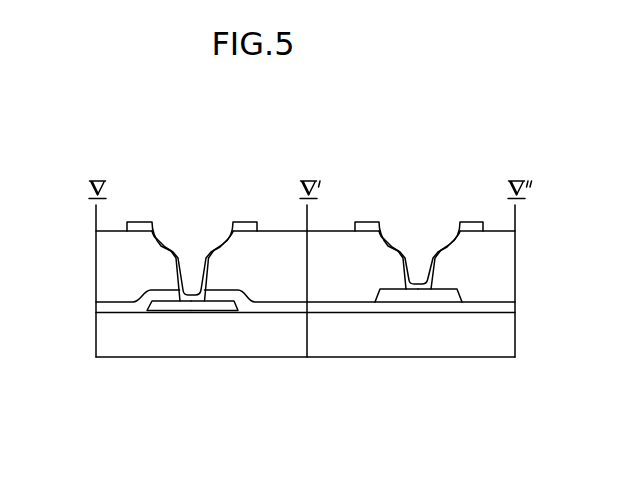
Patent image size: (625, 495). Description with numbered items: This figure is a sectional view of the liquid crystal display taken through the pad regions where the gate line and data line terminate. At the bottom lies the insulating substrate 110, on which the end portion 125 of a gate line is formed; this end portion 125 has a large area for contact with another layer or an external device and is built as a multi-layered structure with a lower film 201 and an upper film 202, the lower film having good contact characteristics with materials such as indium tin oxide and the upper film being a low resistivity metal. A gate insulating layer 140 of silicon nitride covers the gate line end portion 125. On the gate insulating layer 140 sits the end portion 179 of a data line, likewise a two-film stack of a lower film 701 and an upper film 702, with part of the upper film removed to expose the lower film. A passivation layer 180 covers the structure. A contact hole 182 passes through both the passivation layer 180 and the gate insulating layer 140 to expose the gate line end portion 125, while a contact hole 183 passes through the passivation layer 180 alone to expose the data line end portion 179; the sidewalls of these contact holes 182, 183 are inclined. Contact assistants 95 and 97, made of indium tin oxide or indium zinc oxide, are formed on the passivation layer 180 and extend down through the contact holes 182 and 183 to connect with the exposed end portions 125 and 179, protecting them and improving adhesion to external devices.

The contact assistant 95 is at (162, 248).
The contact assistant 97 is at (392, 248).
The insulating substrate 110 is at (328, 345).
The end portion of gate line 125 is at (189, 369).
The gate insulating layer 140 is at (273, 310).
The end portion of data line 179 is at (417, 372).
The passivation layer 180 is at (266, 236).
The contact hole 182 is at (192, 258).
The contact hole 183 is at (419, 258).
The lower gate layer 201 is at (163, 306).
The upper gate layer 202 is at (210, 304).
The lower data layer 701 is at (392, 300).
The upper data layer 702 is at (445, 293).